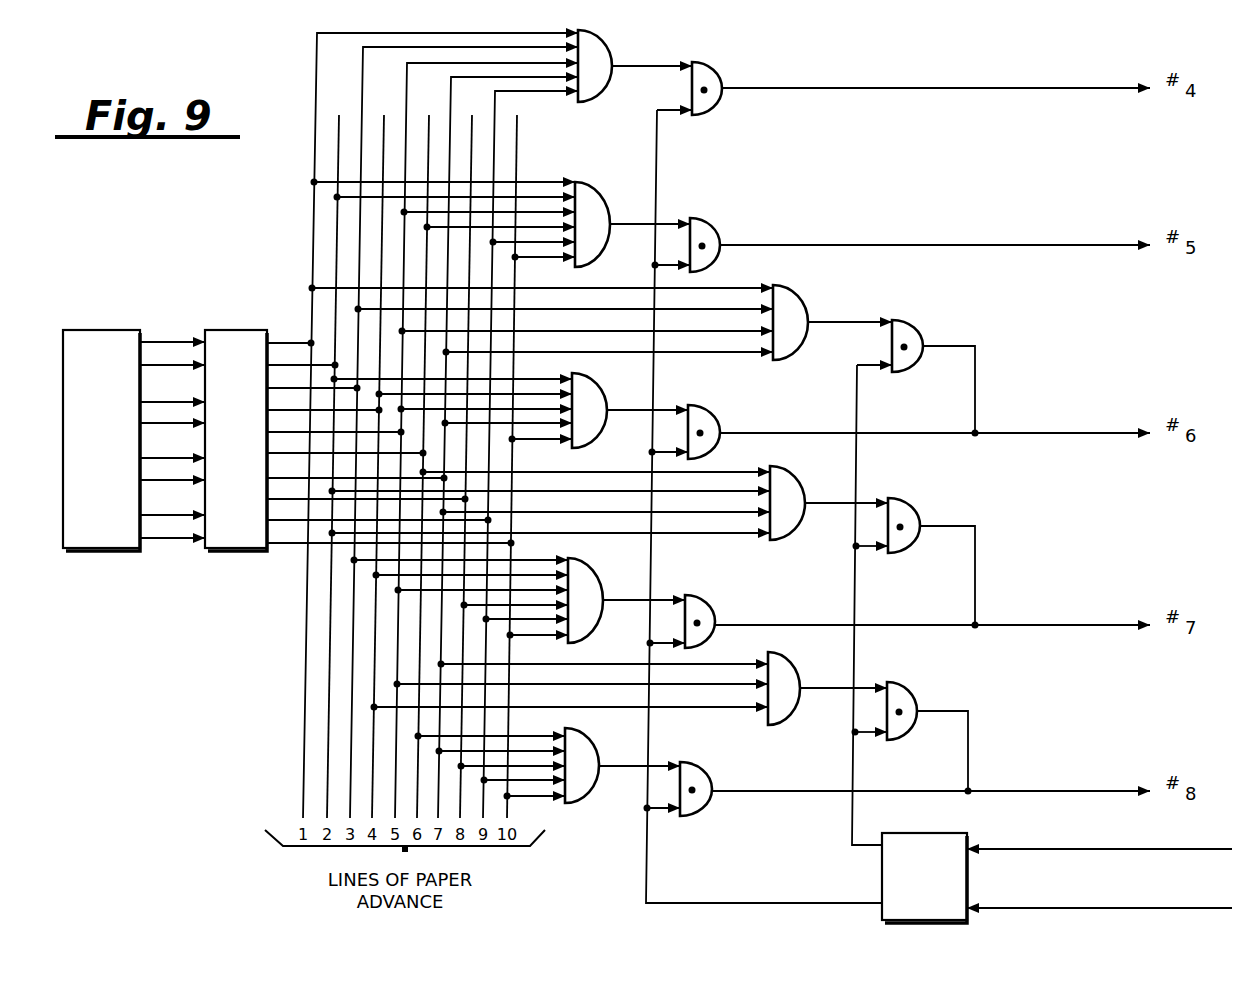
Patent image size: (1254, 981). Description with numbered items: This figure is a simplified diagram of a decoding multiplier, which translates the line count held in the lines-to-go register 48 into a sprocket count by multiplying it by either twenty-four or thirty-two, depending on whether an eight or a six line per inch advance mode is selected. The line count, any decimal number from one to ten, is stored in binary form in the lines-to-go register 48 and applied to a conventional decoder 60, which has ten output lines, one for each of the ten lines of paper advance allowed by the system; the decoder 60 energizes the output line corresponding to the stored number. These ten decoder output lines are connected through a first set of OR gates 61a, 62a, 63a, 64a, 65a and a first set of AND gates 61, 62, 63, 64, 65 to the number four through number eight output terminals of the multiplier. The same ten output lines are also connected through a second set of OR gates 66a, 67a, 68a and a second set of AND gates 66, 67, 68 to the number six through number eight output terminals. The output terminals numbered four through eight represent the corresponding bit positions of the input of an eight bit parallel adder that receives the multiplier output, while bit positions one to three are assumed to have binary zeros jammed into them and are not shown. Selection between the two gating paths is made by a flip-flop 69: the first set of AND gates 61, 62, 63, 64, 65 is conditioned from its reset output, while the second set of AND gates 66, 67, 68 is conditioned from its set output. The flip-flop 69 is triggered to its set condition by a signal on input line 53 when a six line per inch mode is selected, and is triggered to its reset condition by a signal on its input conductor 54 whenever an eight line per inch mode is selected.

The lines-to-go register 48 is at (88, 330).
The decoder 60 is at (226, 330).
The OR gate 61a is at (606, 50).
The OR gate 62a is at (598, 196).
The OR gate 63a is at (597, 389).
The OR gate 64a is at (592, 572).
The OR gate 65a is at (587, 748).
The OR gate 66a is at (797, 296).
The OR gate 67a is at (795, 476).
The OR gate 68a is at (790, 666).
The AND gate 61 is at (708, 62).
The AND gate 62 is at (708, 218).
The AND gate 63 is at (706, 405).
The AND gate 64 is at (702, 595).
The AND gate 65 is at (694, 762).
The AND gate 66 is at (912, 320).
The AND gate 67 is at (906, 498).
The AND gate 68 is at (896, 684).
The flip-flop 69 is at (900, 833).
The input line 53 is at (1040, 849).
The input conductor 54 is at (1040, 908).